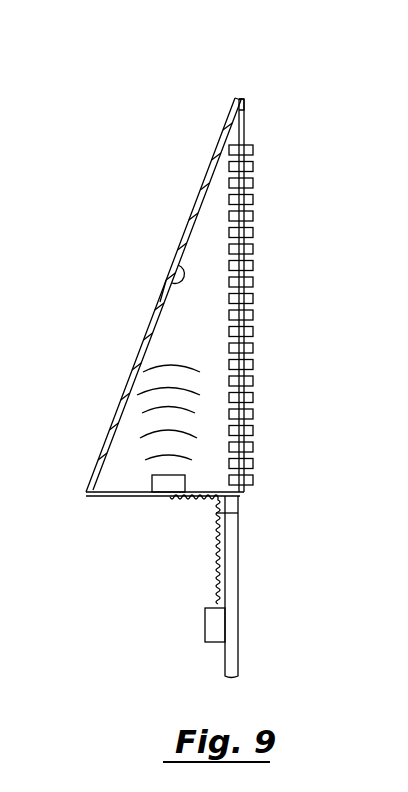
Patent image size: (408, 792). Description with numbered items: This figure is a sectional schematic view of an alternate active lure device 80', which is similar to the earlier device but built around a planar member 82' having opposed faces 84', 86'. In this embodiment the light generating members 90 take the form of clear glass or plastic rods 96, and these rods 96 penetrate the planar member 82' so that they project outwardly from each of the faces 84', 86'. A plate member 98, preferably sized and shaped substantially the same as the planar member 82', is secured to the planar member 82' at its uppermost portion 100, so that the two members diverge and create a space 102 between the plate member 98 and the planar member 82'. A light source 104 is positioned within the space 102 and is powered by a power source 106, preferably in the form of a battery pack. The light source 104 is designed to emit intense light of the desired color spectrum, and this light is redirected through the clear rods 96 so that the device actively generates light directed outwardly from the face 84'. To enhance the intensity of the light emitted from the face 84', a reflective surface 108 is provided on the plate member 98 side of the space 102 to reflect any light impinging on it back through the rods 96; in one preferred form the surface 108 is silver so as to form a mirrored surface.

The device 80' is at (305, 293).
The planar member 82' is at (284, 78).
The face 84' is at (213, 473).
The face 86' is at (163, 295).
The light generating members 90 is at (251, 218).
The rods 96 is at (253, 318).
The plate member 98 is at (158, 302).
The uppermost portion 100 is at (240, 100).
The space 102 is at (190, 332).
The light source 104 is at (160, 483).
The power source 106 is at (213, 628).
The reflective surface 108 is at (174, 258).